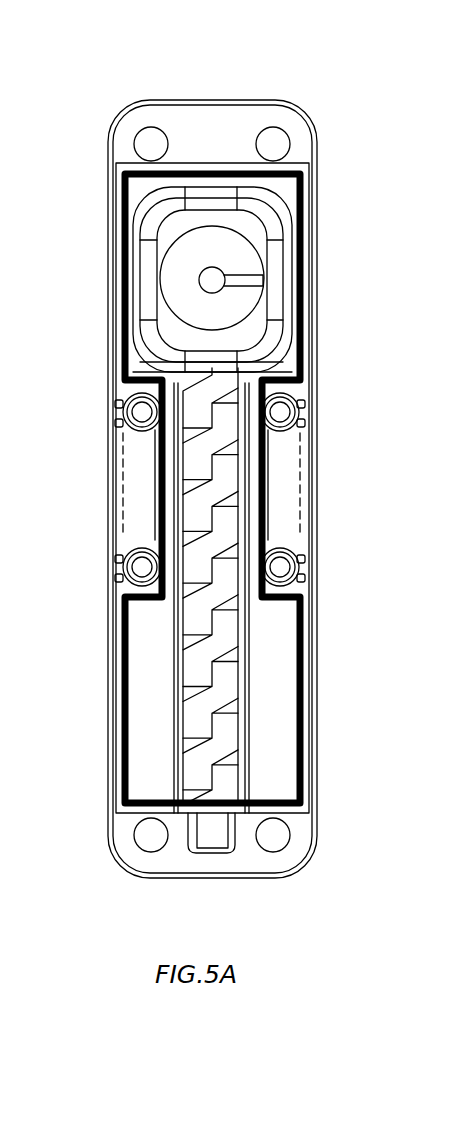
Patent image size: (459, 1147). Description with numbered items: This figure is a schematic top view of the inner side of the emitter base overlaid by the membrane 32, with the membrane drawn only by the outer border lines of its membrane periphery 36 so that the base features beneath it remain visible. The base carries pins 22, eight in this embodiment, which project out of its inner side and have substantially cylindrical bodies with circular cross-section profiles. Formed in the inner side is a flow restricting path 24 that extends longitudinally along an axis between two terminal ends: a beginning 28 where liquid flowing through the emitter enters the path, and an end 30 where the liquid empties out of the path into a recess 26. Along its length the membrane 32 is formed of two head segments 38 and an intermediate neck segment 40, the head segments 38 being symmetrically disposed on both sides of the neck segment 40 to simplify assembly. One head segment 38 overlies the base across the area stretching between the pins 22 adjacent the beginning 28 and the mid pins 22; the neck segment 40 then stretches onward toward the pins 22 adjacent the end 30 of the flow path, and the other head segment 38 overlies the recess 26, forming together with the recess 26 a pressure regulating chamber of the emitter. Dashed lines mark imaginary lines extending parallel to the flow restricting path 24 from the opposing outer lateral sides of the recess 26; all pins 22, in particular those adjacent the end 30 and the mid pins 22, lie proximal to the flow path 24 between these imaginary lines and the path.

The pins 22 is at (278, 127).
The flow restricting path 24 is at (170, 677).
The recess 26 is at (172, 235).
The beginning 28 is at (208, 832).
The end 30 is at (198, 350).
The membrane 32 is at (269, 490).
The membrane periphery 36 is at (272, 530).
The head segments 38 is at (303, 267).
The neck segment 40 is at (269, 510).